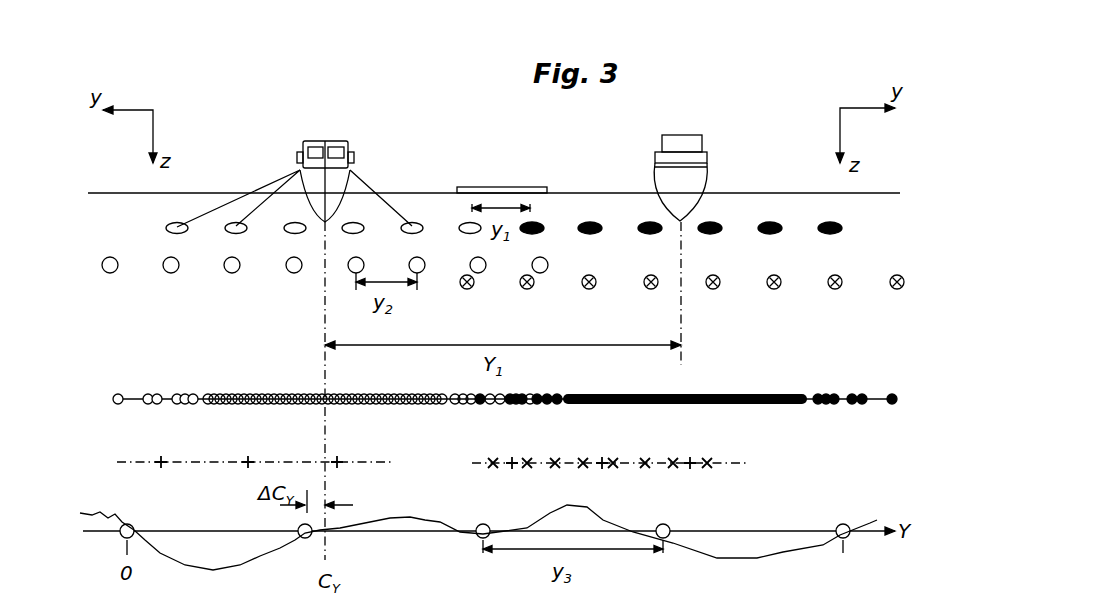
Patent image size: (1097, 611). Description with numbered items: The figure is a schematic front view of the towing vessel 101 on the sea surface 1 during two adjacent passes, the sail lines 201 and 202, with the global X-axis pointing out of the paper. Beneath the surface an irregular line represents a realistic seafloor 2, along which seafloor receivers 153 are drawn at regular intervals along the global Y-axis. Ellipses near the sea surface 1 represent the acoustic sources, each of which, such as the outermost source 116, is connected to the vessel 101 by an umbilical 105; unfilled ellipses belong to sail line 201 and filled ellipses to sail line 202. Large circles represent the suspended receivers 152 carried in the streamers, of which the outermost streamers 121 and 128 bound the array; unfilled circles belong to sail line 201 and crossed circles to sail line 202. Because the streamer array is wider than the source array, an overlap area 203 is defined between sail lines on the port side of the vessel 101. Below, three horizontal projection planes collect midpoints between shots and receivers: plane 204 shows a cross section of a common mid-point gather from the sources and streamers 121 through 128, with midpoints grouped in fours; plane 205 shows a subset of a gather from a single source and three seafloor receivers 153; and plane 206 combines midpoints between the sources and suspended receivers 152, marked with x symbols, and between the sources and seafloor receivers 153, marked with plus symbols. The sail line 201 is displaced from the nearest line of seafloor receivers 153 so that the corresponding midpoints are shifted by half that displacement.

The sea surface 1 is at (205, 192).
The seafloor 2 is at (428, 520).
The vessel 101 is at (323, 140).
The umbilical 105 is at (370, 180).
The source 116 is at (177, 228).
The streamer 121 is at (540, 270).
The streamer 128 is at (113, 272).
The suspended receivers 152 is at (778, 289).
The seafloor receivers 153 is at (133, 525).
The sail line 201 is at (323, 313).
The sail line 202 is at (683, 292).
The overlap area 203 is at (501, 187).
The horizontal projection plane 204 is at (140, 396).
The horizontal projection plane 205 is at (370, 460).
The horizontal projection plane 206 is at (730, 460).